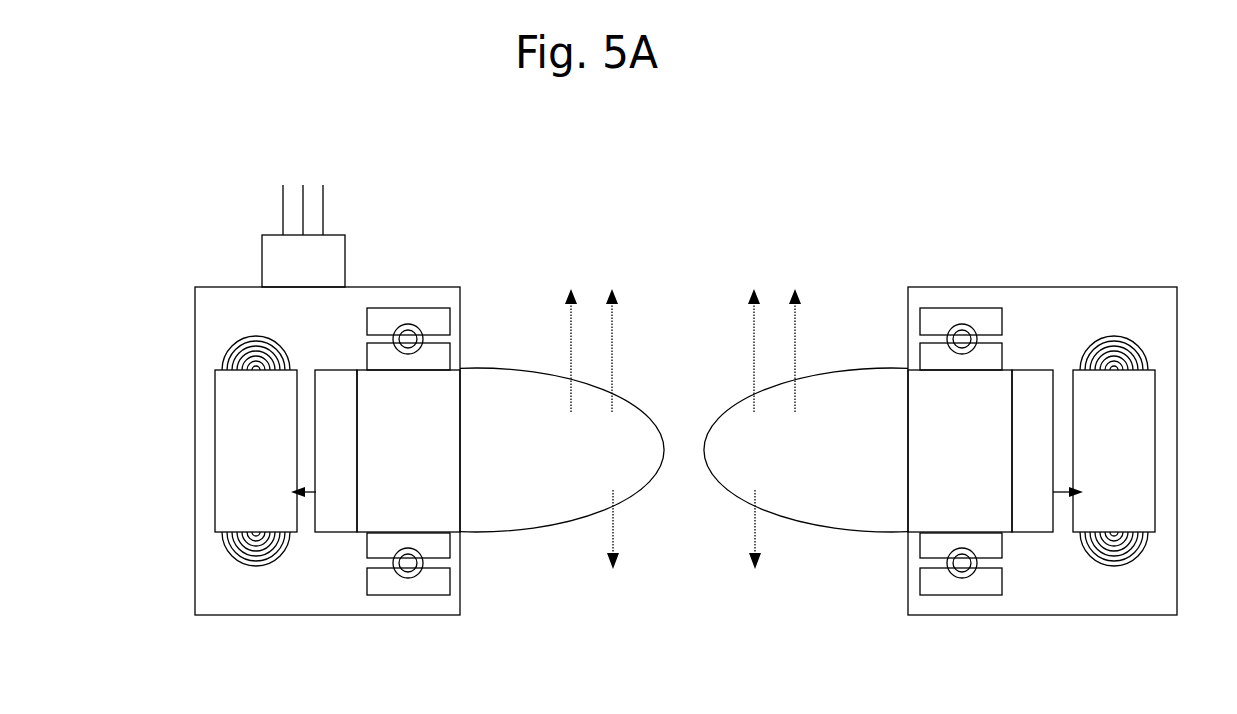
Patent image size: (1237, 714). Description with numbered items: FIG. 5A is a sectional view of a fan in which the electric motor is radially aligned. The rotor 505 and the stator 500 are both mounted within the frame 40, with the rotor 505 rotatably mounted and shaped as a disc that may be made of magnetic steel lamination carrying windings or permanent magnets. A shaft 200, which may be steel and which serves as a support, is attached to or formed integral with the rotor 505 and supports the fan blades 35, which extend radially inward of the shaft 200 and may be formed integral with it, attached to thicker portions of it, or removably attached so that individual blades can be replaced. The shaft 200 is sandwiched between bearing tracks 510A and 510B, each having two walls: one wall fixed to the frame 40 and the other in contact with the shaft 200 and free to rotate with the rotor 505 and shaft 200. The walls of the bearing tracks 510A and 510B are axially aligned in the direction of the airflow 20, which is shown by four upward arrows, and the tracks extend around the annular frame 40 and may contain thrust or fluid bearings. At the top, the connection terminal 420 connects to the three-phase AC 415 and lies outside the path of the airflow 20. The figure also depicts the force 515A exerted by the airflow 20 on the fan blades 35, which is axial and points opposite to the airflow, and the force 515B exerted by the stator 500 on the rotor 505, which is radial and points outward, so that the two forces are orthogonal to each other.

The frame 40 is at (632, 451).
The connection terminal 420 is at (303, 270).
The three-phase AC 415 is at (318, 164).
The stator 500 is at (685, 451).
The rotor 505 is at (684, 451).
The shaft 200 is at (684, 451).
The bearing track 510A is at (440, 323).
The bearing track 510B is at (495, 613).
The fan blades 35 is at (679, 450).
The airflow 20 is at (683, 350).
The force 515A is at (691, 544).
The force 515B is at (301, 495).